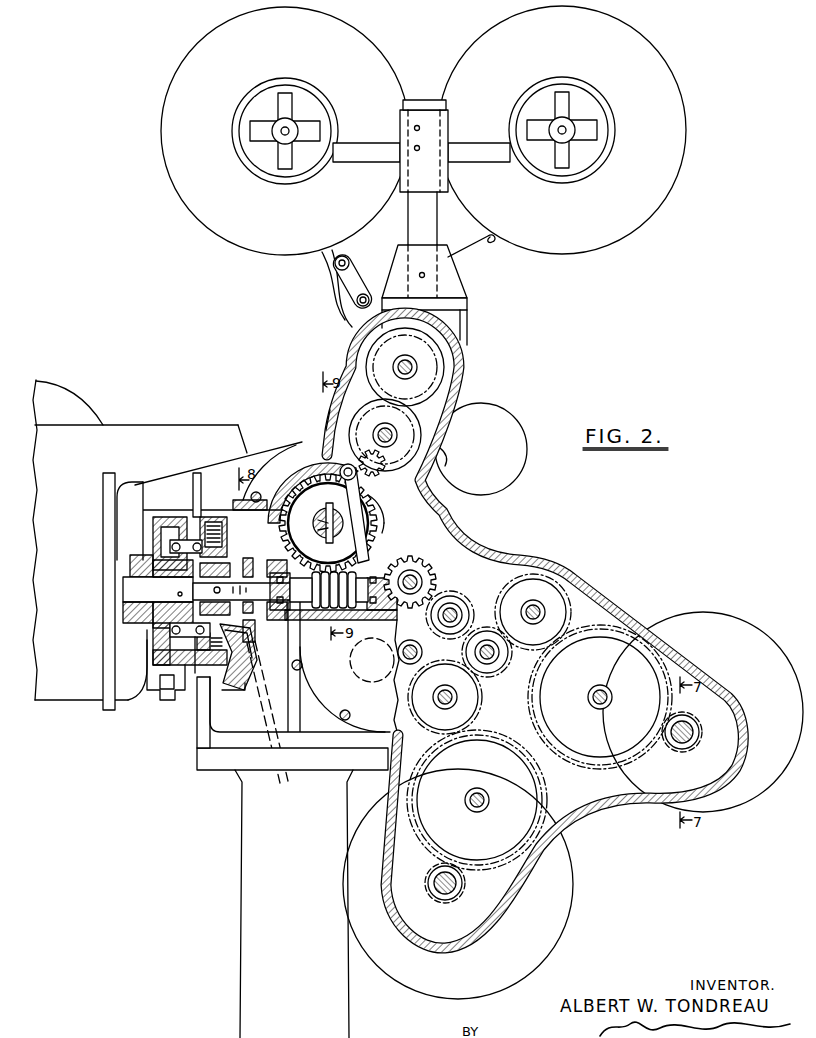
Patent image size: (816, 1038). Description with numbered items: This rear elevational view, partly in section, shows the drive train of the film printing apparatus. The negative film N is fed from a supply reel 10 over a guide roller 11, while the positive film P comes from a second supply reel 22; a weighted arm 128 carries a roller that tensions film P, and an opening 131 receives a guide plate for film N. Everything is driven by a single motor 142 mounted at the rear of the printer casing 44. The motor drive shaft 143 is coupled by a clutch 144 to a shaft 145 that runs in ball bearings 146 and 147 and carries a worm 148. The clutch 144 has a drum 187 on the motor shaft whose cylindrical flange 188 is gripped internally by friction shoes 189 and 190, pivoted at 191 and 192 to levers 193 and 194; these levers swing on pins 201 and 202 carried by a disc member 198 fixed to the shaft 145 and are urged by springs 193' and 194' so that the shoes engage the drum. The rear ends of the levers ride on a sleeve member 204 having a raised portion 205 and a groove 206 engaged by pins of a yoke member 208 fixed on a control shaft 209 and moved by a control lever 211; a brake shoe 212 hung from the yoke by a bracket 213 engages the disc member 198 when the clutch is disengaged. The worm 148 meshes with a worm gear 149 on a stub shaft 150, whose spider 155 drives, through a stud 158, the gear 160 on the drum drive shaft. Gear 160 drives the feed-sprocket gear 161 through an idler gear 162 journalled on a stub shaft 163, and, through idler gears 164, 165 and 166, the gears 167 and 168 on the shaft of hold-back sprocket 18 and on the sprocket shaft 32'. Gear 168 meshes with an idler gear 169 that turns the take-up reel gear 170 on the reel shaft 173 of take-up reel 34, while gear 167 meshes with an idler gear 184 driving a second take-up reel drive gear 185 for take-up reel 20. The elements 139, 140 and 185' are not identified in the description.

The supply reel 10 is at (380, 74).
The supply reel 22 is at (663, 72).
The guide roller 11 is at (348, 266).
The negative film N is at (332, 264).
The positive film P is at (471, 249).
The opening 131 is at (407, 362).
The gear 161 is at (456, 373).
The stub shaft 163 is at (375, 430).
The stud 158 is at (378, 462).
The idler gear 162 is at (438, 453).
The weighted arm 128 is at (507, 430).
The printer casing 44 is at (330, 417).
The spider 155 is at (340, 466).
The stub shaft 150 is at (327, 512).
The groove 206 is at (318, 526).
The sleeve member 204 is at (321, 538).
The worm 148 is at (340, 548).
The worm gear 149 is at (282, 490).
The motor 142 is at (77, 488).
The cylindrical flange 188 is at (197, 478).
The drum 187 is at (165, 512).
The disc member 198 is at (212, 506).
The pin 201 is at (214, 518).
The friction shoe 189 is at (156, 534).
The pivotal connection 191 is at (169, 547).
The lever 193 is at (257, 538).
The raised portion 205 is at (236, 562).
The spring 193' is at (158, 589).
The lever 194 is at (231, 595).
The drive shaft 143 is at (122, 593).
The gear 160 is at (404, 562).
The idler gear 164 is at (436, 583).
The idler gear 165 is at (466, 598).
The gear 139 is at (423, 652).
The ball bearing 147 is at (386, 619).
The ball bearing 146 is at (332, 624).
The opening 140 is at (372, 683).
The idler gear 166 is at (497, 674).
The film hold-back sprocket 18 is at (462, 699).
The gear 167 is at (480, 726).
The gear 168 is at (581, 567).
The sprocket shaft 32' is at (547, 612).
The idler gear 169 is at (608, 691).
The take-up reel 34 is at (735, 634).
The take-up reel gear 170 is at (690, 726).
The reel shaft 173 is at (690, 739).
The idler gear 184 is at (553, 801).
The take-up reel drive gear 185 is at (491, 791).
The bolt 185' is at (444, 894).
The take-up reel 20 is at (538, 947).
The pivotal connection 192 is at (157, 650).
The friction shoe 190 is at (156, 660).
The pin 202 is at (185, 670).
The clutch 144 is at (172, 697).
The spring 194' is at (229, 694).
The shaft 145 is at (258, 624).
The yoke member 208 is at (257, 650).
The control shaft 209 is at (258, 664).
The bracket 213 is at (260, 679).
The brake shoe 212 is at (263, 693).
The control lever 211 is at (279, 757).